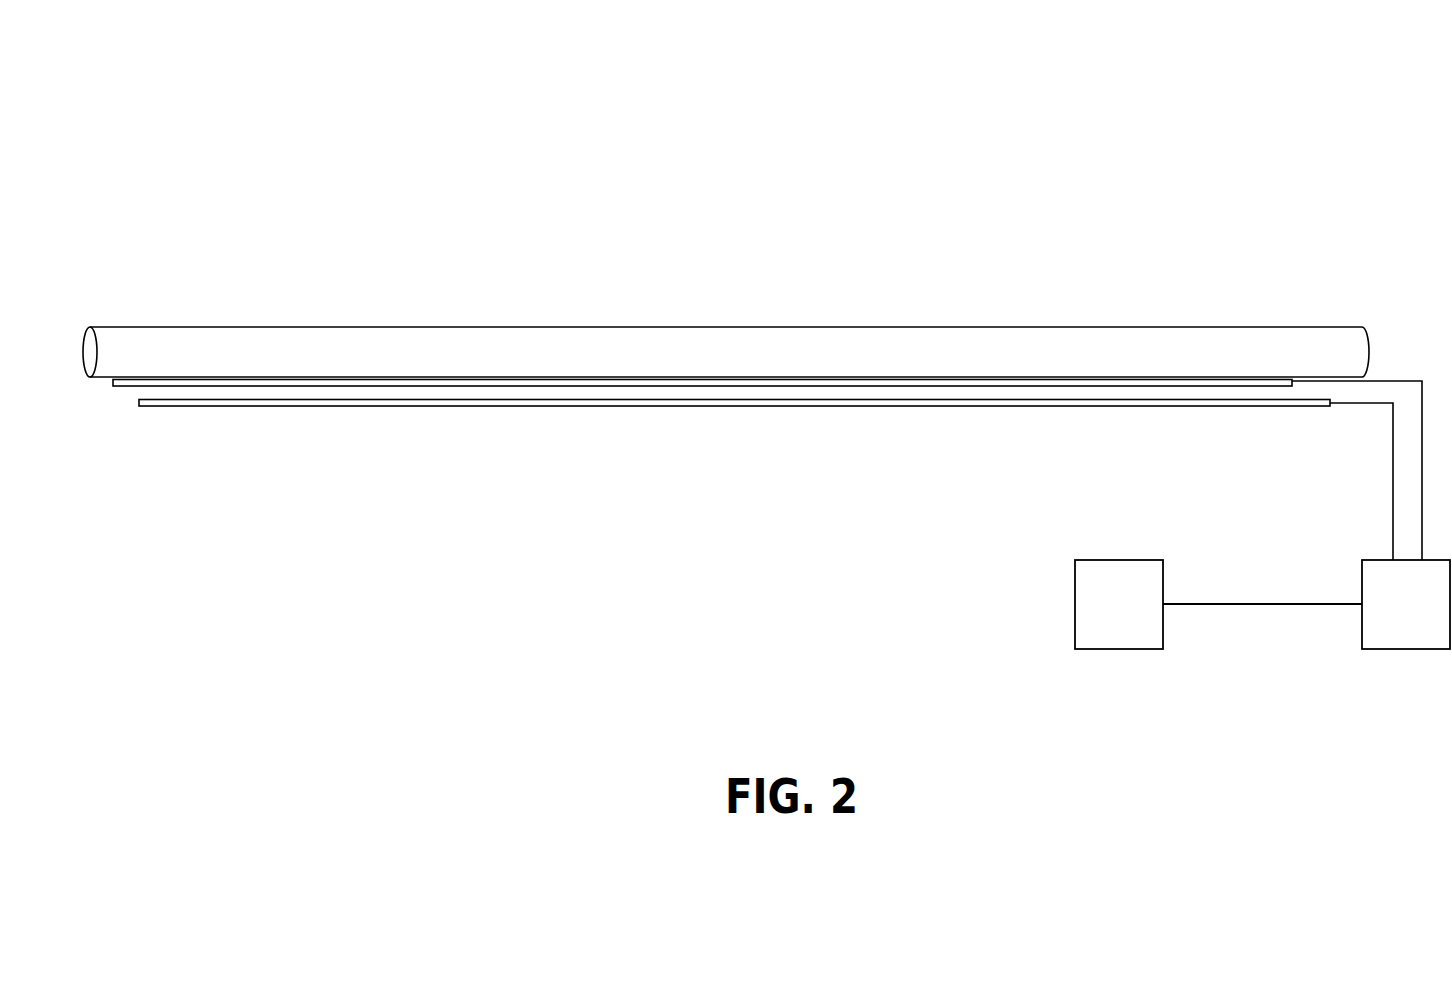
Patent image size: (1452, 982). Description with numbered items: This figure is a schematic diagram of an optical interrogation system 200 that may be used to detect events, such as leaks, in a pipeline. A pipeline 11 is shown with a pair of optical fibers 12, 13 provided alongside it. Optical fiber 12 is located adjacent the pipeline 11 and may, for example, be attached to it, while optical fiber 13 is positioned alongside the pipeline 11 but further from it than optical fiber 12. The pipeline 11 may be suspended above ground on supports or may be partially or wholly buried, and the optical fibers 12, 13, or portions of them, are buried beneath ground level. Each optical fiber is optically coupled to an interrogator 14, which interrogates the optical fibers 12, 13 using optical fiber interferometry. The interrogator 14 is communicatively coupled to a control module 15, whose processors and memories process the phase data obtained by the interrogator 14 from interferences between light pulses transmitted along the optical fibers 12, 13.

The optical interrogation system 200 is at (1212, 122).
The pipeline 11 is at (717, 347).
The optical fiber 12 is at (801, 378).
The optical fiber 13 is at (853, 406).
The interrogator 14 is at (1421, 622).
The control module 15 is at (1133, 622).